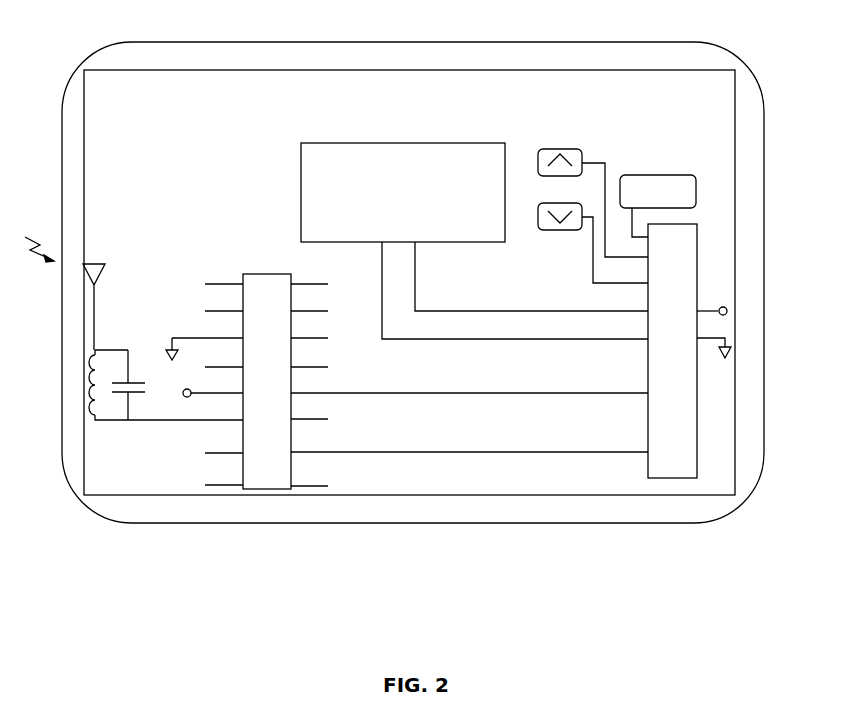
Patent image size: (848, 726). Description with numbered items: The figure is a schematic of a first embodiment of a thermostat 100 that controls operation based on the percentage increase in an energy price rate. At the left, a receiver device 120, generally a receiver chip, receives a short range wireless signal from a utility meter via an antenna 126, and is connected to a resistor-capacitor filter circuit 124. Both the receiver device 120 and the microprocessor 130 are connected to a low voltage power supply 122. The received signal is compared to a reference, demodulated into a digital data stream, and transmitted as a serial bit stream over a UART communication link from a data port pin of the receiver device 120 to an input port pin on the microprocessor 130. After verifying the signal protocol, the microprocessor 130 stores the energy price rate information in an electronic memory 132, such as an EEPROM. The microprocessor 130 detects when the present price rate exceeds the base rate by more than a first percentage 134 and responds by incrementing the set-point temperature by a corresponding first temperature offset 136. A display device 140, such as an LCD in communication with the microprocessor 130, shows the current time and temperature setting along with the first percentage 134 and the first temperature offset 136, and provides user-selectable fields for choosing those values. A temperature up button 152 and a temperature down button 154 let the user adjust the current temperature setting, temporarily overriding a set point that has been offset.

The thermostat 100 is at (287, 523).
The receiver device 120 is at (263, 270).
The low voltage power supply 122 is at (172, 322).
The resistor-capacitor filter circuit 124 is at (105, 271).
The antenna 126 is at (110, 420).
The microprocessor 130 is at (697, 259).
The electronic memory 132 is at (697, 181).
The first percentage 134 is at (330, 145).
The first temperature offset 136 is at (301, 185).
The display device 140 is at (300, 157).
The temperature up button 152 is at (584, 154).
The temperature down button 154 is at (540, 212).